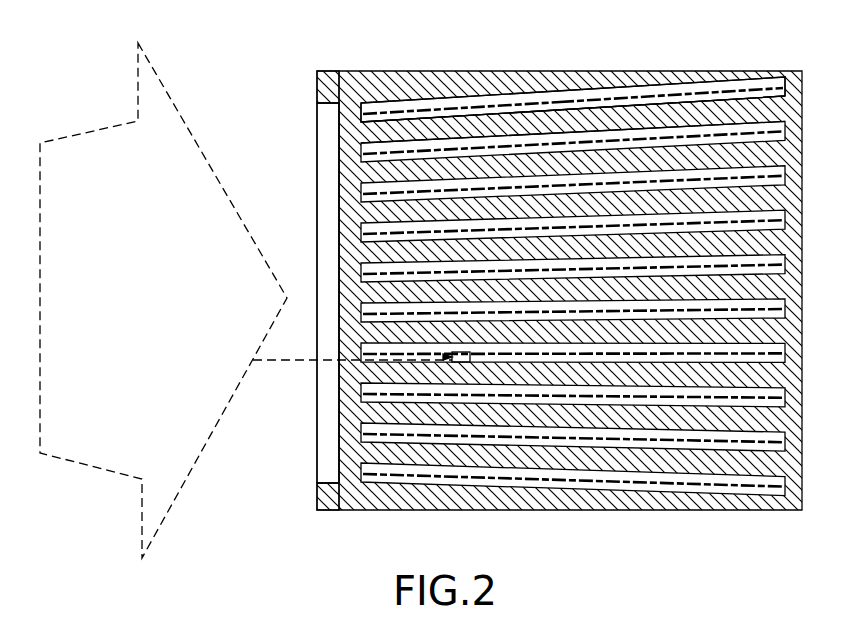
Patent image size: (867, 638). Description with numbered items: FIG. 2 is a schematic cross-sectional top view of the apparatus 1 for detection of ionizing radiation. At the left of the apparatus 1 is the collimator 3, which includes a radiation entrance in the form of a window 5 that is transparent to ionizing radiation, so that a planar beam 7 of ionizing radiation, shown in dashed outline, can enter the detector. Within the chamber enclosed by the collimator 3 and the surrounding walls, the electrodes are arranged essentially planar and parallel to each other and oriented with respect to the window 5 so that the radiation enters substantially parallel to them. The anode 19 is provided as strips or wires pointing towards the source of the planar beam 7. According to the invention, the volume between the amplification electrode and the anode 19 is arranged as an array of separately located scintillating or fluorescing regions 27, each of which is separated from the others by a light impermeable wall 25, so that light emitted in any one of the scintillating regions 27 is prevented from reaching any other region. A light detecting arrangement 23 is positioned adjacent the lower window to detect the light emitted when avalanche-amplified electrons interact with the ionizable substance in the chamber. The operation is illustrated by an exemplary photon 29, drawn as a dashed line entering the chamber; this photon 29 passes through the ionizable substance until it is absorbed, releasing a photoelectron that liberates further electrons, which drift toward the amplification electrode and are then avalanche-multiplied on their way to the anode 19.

The apparatus 1 is at (804, 43).
The collimator 3 is at (318, 93).
The window 5 is at (320, 153).
The planar beam 7 is at (180, 120).
The anode 19 is at (730, 90).
The light detecting arrangement 23 is at (660, 92).
The light impermeable wall 25 is at (568, 118).
The scintillating regions 27 is at (455, 100).
The photon 29 is at (284, 366).